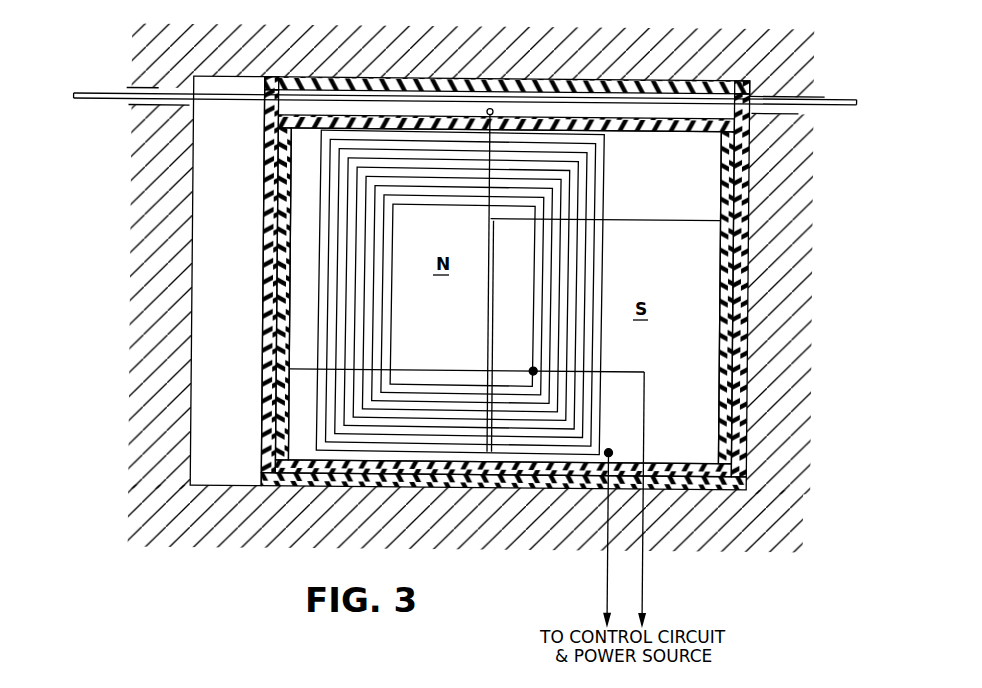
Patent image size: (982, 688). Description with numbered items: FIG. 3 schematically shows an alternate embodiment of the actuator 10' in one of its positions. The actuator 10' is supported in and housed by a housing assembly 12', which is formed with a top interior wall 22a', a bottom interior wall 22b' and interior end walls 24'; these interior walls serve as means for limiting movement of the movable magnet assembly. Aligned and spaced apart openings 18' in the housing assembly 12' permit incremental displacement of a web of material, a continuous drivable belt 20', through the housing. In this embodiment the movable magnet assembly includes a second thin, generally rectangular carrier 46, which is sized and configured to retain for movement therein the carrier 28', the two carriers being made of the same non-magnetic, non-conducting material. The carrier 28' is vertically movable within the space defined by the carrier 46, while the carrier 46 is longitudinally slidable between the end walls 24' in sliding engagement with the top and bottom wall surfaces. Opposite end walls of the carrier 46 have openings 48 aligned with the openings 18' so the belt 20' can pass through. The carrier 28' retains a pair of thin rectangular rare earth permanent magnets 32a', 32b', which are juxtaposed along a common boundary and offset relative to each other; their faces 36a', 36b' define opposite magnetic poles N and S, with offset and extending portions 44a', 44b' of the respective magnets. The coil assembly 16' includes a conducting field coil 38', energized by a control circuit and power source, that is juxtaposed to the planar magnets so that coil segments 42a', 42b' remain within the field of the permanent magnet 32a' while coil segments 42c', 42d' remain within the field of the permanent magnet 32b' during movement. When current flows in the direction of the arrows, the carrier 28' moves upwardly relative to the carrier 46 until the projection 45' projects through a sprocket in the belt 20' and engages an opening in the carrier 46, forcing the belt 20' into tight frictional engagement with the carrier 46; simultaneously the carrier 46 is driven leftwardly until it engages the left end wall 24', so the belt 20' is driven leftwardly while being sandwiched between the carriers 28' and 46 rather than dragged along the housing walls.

The actuator 10' is at (422, 259).
The housing assembly 12' is at (814, 288).
The coil assembly 16' is at (466, 509).
The openings 18' is at (488, 65).
The belt 20' is at (464, 69).
The top interior wall 22a' is at (507, 75).
The bottom interior wall 22b' is at (447, 520).
The interior end walls 24' is at (448, 283).
The carrier member 28' is at (247, 296).
The permanent magnet 32a' is at (461, 295).
The permanent magnet 32b' is at (785, 298).
The magnetic face 36a' is at (459, 336).
The magnetic face 36b' is at (651, 484).
The conducting coil 38' is at (504, 295).
The coil segment 42a' is at (403, 291).
The coil segment 42b' is at (462, 226).
The coil segment 42c' is at (517, 285).
The coil segment 42d' is at (460, 376).
The offset extending portion 44a' is at (515, 232).
The offset extending portion 44b' is at (546, 538).
The projection 45' is at (494, 195).
The second carrier 46 is at (265, 145).
The openings 48 is at (267, 80).